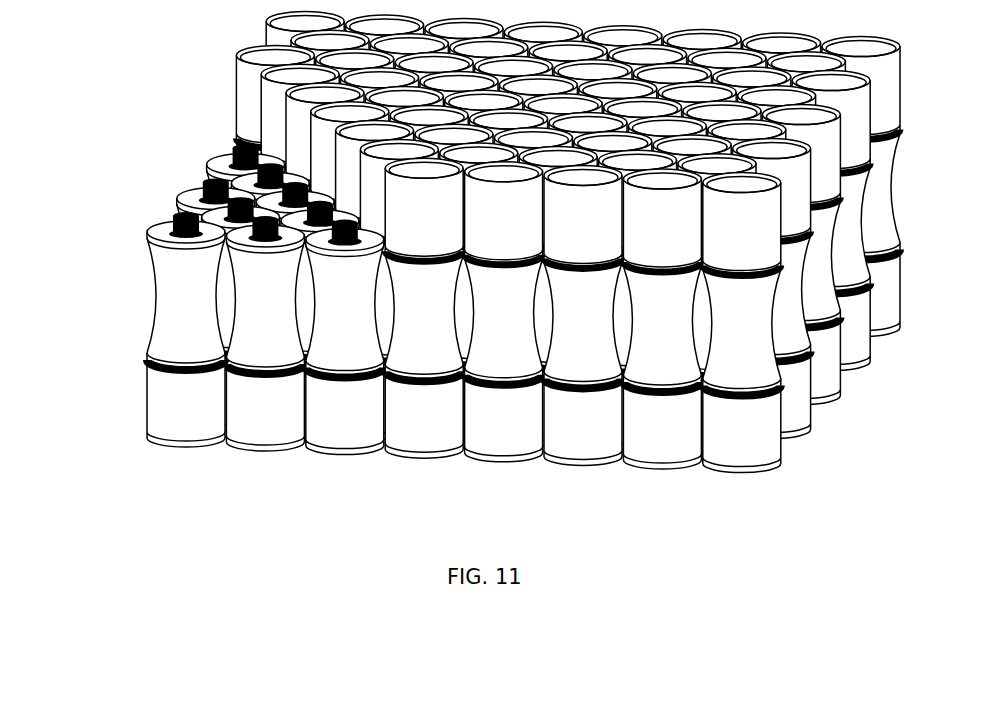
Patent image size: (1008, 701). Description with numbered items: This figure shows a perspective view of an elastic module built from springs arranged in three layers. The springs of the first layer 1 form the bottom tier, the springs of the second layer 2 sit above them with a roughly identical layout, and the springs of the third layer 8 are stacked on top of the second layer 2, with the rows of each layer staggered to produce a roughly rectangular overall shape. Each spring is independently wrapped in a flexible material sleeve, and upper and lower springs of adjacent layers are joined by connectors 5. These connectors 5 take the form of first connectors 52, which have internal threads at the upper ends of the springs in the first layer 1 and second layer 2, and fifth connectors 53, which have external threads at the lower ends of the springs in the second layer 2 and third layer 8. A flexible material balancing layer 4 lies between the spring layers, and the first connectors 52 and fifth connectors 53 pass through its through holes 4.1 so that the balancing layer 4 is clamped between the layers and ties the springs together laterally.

The first layer 1 is at (186, 405).
The second layer 2 is at (179, 305).
The flexible material balancing layer 4 is at (157, 251).
The through hole 4.1 is at (297, 247).
The connector 5 is at (174, 221).
The fifth connector 53 is at (176, 213).
The third layer 8 is at (250, 107).
The first connector 52 is at (727, 265).